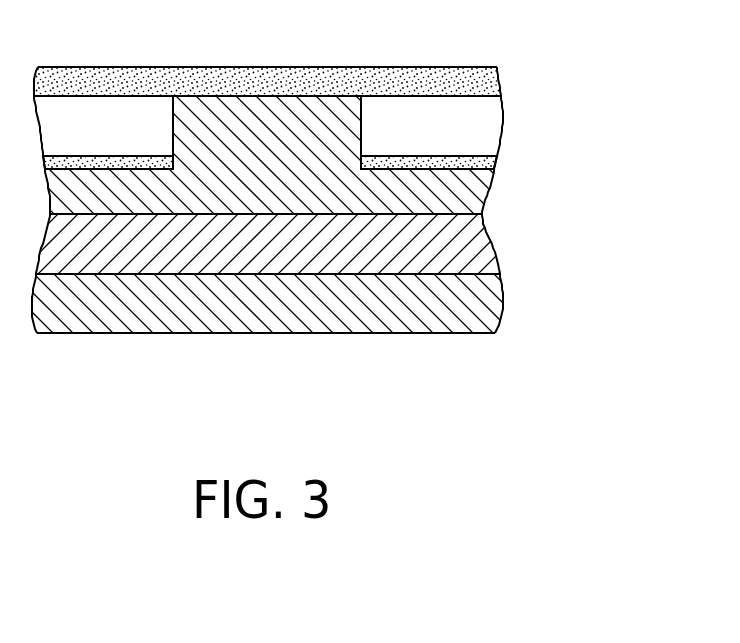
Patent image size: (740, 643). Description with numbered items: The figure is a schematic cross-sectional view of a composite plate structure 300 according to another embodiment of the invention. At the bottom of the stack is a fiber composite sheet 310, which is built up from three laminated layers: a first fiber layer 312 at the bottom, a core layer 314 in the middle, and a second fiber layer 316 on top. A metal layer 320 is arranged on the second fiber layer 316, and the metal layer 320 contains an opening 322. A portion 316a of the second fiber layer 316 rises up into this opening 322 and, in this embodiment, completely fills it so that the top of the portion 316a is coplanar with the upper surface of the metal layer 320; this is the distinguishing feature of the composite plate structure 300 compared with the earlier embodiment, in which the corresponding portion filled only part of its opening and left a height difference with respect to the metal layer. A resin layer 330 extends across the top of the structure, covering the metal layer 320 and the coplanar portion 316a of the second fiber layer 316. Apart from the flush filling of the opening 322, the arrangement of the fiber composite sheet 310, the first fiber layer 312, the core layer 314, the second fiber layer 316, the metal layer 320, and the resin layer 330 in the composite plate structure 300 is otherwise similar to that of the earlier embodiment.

The composite plate structure 300 is at (547, 437).
The fiber composite sheet 310 is at (594, 175).
The first fiber layer 312 is at (468, 305).
The core layer 314 is at (468, 245).
The second fiber layer 316 is at (485, 192).
The portion of the second fiber layer 316a is at (271, 143).
The metal layer 320 is at (480, 132).
The opening 322 is at (350, 148).
The resin layer 330 is at (498, 83).